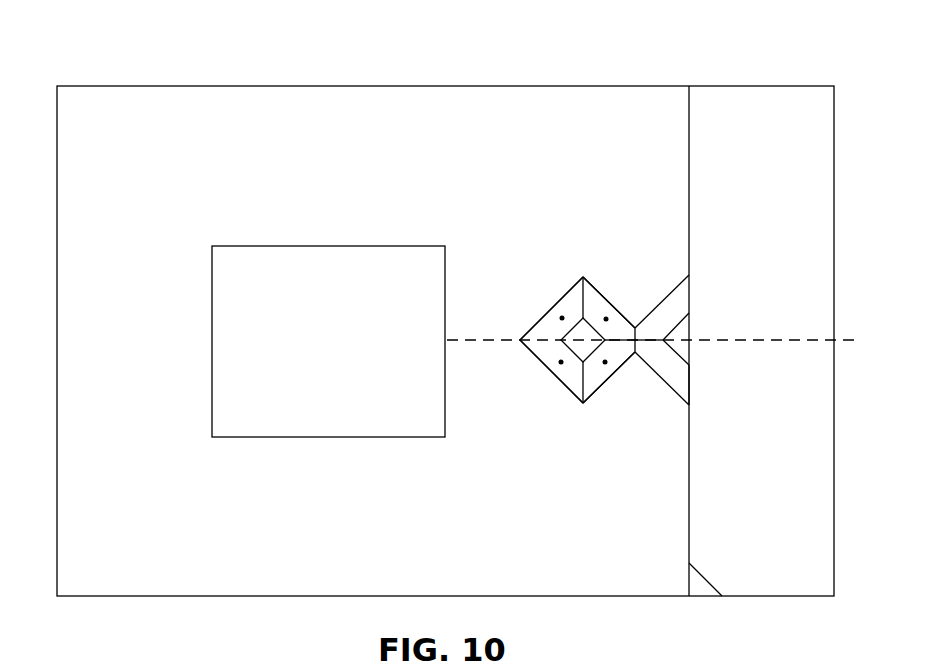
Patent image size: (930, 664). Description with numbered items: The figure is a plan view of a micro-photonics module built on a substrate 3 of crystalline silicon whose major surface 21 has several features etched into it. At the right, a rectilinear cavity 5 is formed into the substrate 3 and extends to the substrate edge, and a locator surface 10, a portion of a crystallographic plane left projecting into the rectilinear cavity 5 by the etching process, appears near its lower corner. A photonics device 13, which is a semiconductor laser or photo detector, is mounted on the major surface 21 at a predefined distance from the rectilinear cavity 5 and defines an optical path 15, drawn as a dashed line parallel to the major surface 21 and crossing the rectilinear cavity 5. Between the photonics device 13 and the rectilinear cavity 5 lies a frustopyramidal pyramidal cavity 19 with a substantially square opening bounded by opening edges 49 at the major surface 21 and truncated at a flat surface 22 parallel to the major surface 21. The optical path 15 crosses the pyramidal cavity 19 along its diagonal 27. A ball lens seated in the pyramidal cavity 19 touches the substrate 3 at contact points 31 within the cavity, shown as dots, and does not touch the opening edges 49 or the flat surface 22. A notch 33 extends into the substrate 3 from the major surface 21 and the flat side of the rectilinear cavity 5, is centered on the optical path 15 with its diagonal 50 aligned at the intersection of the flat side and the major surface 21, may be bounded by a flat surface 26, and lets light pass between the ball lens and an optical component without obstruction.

The substrate 3 is at (78, 532).
The rectilinear cavity 5 is at (812, 520).
The locator surface 10 is at (709, 580).
The photonics device 13 is at (328, 246).
The optical path 15 is at (762, 347).
The pyramidal cavity 19 is at (547, 352).
The major surface 21 is at (135, 130).
The flat surface 22 is at (583, 339).
The flat surface 26 is at (682, 338).
The diagonal 27 is at (618, 340).
The contact points 31 is at (562, 318).
The notch 33 is at (676, 308).
The opening edges 49 is at (569, 289).
The diagonal 50 is at (689, 383).